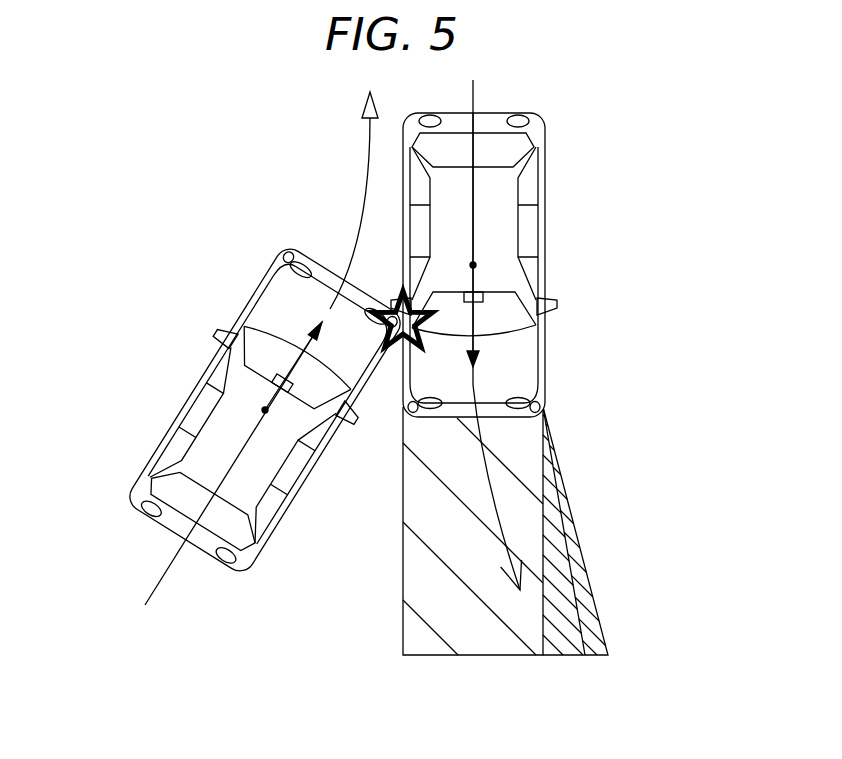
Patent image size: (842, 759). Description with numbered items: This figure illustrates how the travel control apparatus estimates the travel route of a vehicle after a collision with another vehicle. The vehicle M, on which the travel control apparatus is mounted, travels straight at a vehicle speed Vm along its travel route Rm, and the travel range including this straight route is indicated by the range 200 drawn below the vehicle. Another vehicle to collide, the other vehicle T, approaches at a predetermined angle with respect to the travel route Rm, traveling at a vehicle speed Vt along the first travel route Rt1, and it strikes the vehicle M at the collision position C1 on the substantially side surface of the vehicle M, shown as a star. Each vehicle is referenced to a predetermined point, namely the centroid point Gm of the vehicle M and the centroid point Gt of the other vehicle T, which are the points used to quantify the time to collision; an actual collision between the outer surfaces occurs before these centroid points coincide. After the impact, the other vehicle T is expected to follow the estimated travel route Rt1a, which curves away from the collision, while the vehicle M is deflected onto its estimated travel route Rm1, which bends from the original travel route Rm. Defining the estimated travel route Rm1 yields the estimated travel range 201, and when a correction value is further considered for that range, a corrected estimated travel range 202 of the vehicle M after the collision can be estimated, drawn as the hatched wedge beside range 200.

The vehicle M is at (538, 222).
The other vehicle to collide T is at (237, 392).
The centroid point of vehicle M Gm is at (478, 265).
The centroid point of other vehicle T Gt is at (262, 410).
The vehicle speed of vehicle M Vm is at (480, 345).
The vehicle speed of other vehicle T Vt is at (262, 330).
The travel route of vehicle M Rm is at (477, 93).
The estimated travel route of vehicle M after collision Rm1 is at (525, 580).
The first travel route Rt1 is at (158, 585).
The estimated travel route of other vehicle T after collision Rt1a is at (365, 190).
The collision position C1 is at (392, 358).
The travel range 200 is at (520, 463).
The estimated travel range 201 is at (553, 503).
The corrected estimated travel range 202 is at (570, 535).